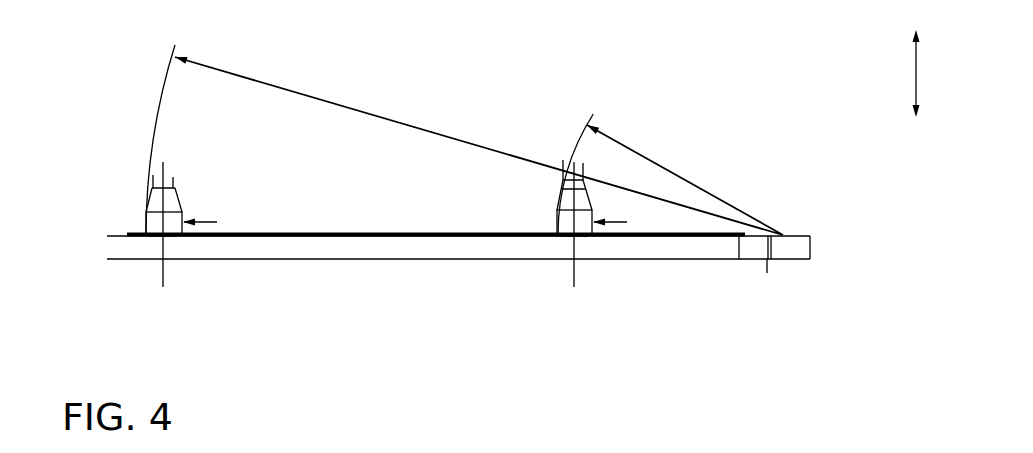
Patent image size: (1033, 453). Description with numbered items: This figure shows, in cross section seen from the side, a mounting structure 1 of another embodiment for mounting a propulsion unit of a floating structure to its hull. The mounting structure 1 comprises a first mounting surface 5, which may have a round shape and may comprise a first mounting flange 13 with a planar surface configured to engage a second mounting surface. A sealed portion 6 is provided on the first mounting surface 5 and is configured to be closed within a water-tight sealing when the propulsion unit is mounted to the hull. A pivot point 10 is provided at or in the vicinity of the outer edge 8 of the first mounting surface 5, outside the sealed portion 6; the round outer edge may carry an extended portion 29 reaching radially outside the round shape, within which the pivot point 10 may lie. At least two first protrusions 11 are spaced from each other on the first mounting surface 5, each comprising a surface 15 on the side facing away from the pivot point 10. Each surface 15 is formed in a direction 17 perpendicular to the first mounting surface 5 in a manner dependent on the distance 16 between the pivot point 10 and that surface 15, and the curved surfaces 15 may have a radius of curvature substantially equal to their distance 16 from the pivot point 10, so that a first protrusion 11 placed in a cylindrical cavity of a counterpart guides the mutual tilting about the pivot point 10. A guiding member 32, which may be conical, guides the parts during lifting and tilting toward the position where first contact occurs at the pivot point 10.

The mounting structure 1 is at (673, 345).
The first mounting surface 5 is at (335, 222).
The sealed portion 6 is at (170, 240).
The edge 8 is at (808, 235).
The pivot point 10 is at (788, 235).
The first protrusion 11 is at (155, 234).
The first mounting flange 13 is at (133, 208).
The surface 15 is at (146, 214).
The distance 16 is at (374, 110).
The direction 17 is at (915, 75).
The extended portion 29 is at (787, 250).
The guiding member 32 is at (147, 188).